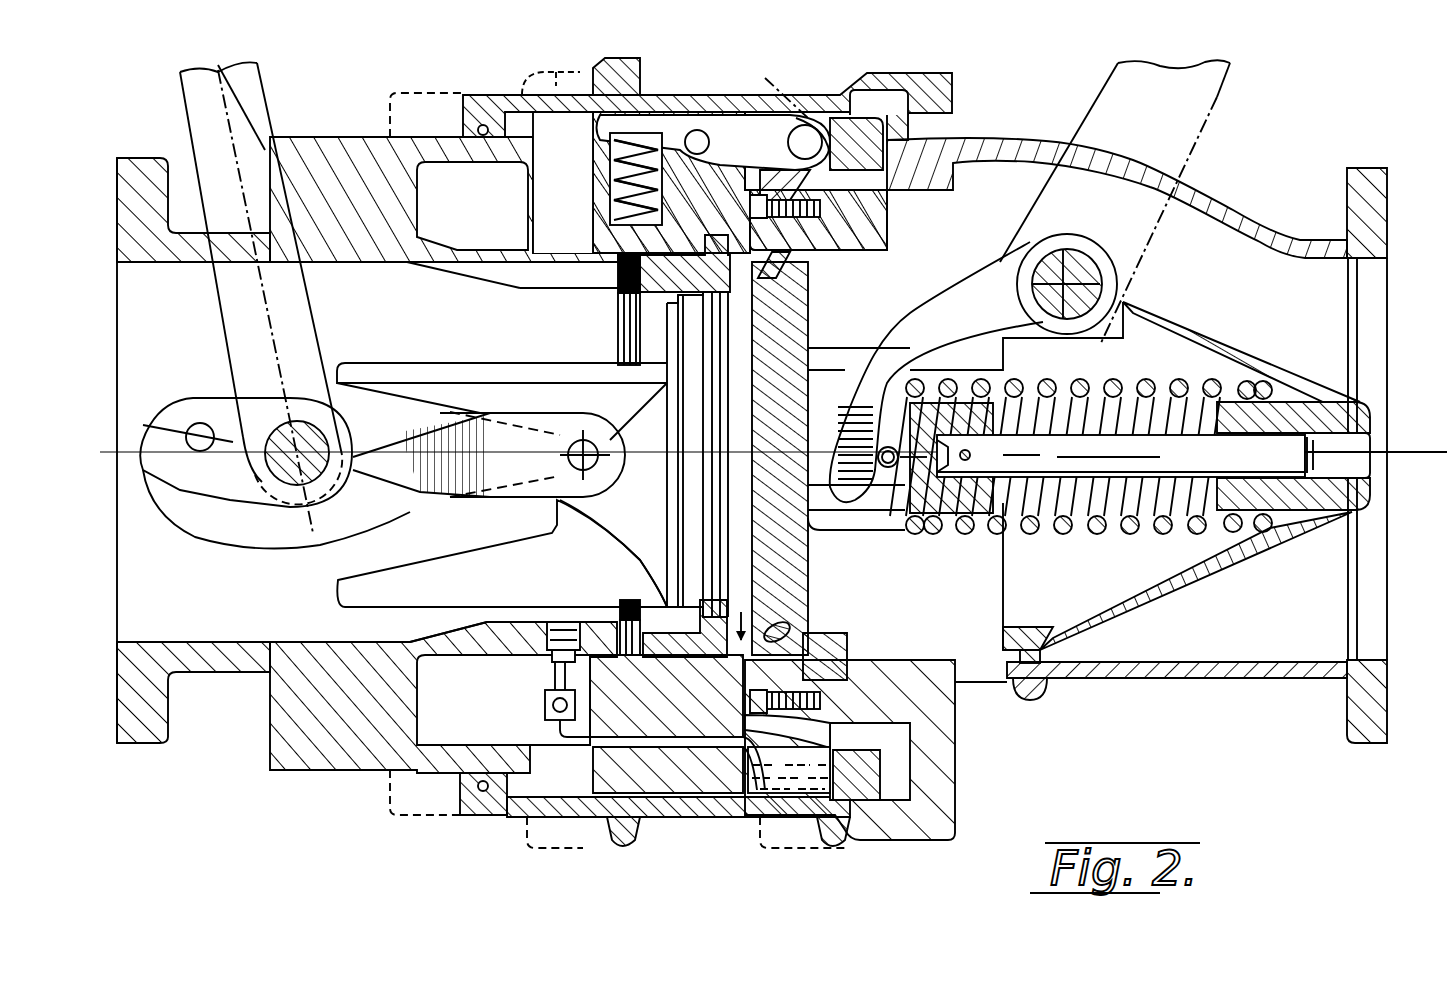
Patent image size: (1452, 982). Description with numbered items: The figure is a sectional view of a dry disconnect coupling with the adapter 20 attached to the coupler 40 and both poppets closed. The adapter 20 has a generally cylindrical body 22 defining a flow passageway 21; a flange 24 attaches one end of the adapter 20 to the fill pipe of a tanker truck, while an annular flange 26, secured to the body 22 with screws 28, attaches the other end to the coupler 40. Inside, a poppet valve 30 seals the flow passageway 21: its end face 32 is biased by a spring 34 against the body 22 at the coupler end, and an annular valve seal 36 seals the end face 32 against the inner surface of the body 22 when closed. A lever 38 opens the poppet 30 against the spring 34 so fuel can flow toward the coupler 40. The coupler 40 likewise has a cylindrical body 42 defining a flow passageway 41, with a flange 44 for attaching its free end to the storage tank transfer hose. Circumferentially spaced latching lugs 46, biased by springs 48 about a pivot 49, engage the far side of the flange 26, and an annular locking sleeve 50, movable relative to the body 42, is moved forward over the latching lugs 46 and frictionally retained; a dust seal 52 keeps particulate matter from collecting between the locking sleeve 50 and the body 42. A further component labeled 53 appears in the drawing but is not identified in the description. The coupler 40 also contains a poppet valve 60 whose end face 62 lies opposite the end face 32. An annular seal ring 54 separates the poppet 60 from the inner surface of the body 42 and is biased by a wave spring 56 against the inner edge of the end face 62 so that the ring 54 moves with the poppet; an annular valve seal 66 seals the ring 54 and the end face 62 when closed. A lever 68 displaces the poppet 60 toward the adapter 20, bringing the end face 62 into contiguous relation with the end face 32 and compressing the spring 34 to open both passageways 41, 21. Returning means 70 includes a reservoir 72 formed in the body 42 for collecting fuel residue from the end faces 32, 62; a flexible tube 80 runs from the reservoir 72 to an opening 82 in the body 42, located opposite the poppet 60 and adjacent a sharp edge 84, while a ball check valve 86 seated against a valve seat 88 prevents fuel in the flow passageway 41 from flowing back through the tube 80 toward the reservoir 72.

The adapter 20 is at (1222, 176).
The flow passageway 21 is at (1262, 296).
The body 22 is at (1243, 672).
The flange 24 is at (1388, 190).
The annular flange 26 is at (810, 178).
The screws 28 is at (835, 210).
The poppet valve 30 is at (797, 314).
The end face 32 is at (797, 345).
The spring 34 is at (1070, 528).
The annular valve seal 36 is at (787, 272).
The lever 38 is at (1203, 92).
The coupler 40 is at (262, 772).
The flow passageway 41 is at (207, 594).
The body 42 is at (318, 770).
The flange 44 is at (117, 170).
The latching lugs 46 is at (780, 95).
The springs 48 is at (606, 170).
The pivot 49 is at (720, 120).
The annular locking sleeve 50 is at (952, 88).
The dust seal 52 is at (490, 135).
The body block 53 is at (670, 265).
The annular seal ring 54 is at (640, 312).
The wave spring 56 is at (618, 272).
The poppet valve 60 is at (500, 362).
The end face 62 is at (740, 450).
The annular valve seal 66 is at (800, 571).
The lever 68 is at (268, 90).
The returning means 70 is at (846, 726).
The reservoir 72 is at (815, 797).
The flexible tube 80 is at (723, 752).
The opening 82 is at (567, 612).
The sharp edge 84 is at (556, 622).
The ball check valve 86 is at (548, 690).
The valve seat 88 is at (545, 718).